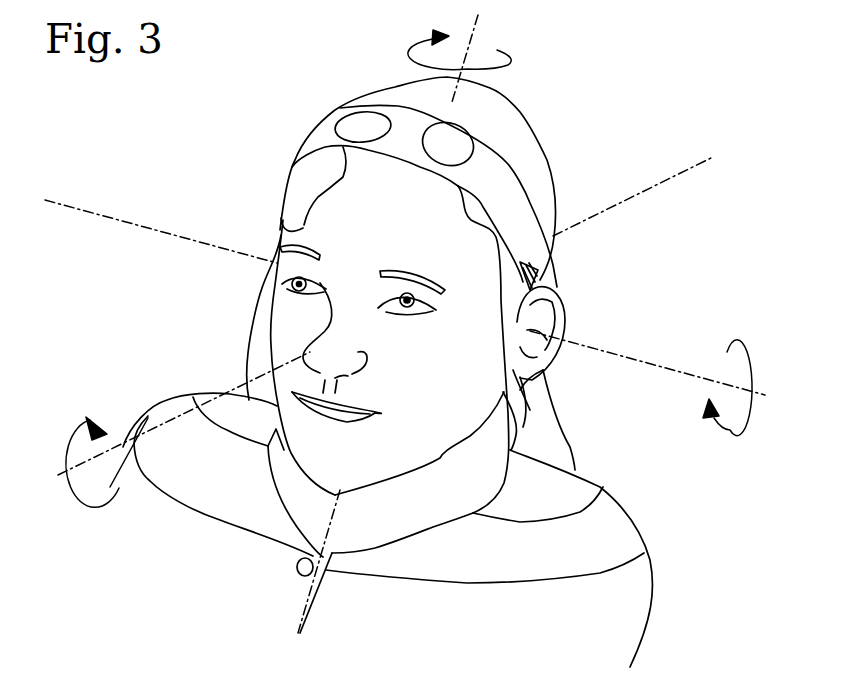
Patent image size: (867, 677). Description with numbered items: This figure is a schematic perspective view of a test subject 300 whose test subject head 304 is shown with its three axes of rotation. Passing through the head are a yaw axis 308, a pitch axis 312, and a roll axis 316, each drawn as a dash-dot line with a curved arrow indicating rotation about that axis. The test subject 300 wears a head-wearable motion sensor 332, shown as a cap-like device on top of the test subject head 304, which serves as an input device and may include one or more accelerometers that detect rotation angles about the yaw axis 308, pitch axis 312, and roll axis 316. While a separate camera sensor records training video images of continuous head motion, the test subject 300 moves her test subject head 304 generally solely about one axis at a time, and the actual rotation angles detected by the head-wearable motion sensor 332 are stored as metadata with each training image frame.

The test subject 300 is at (388, 407).
The test subject head 304 is at (219, 285).
The yaw axis 308 is at (480, 17).
The pitch axis 312 is at (633, 352).
The roll axis 316 is at (650, 190).
The head-wearable motion sensor 332 is at (515, 209).